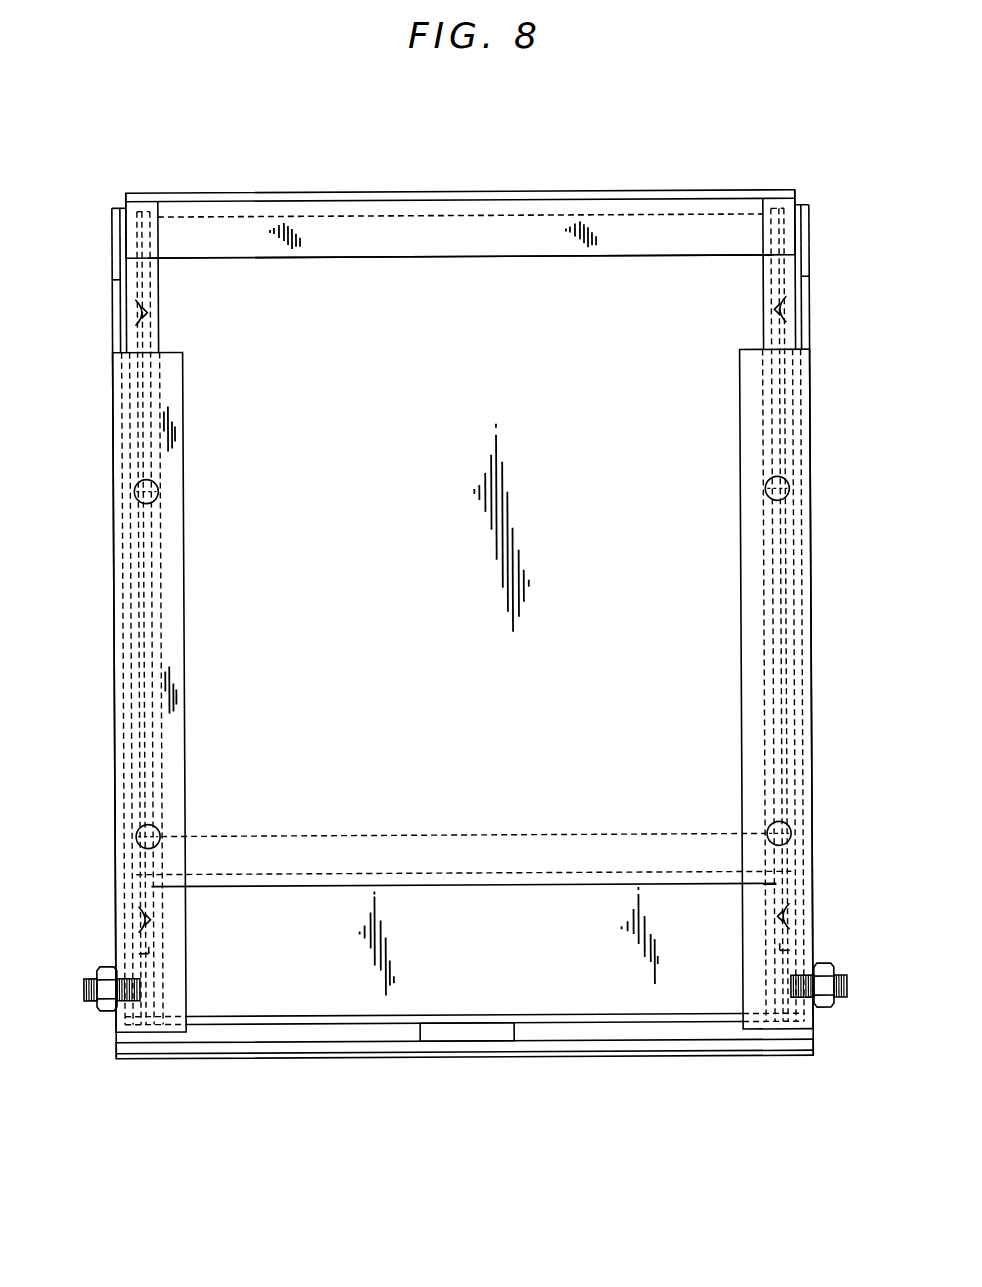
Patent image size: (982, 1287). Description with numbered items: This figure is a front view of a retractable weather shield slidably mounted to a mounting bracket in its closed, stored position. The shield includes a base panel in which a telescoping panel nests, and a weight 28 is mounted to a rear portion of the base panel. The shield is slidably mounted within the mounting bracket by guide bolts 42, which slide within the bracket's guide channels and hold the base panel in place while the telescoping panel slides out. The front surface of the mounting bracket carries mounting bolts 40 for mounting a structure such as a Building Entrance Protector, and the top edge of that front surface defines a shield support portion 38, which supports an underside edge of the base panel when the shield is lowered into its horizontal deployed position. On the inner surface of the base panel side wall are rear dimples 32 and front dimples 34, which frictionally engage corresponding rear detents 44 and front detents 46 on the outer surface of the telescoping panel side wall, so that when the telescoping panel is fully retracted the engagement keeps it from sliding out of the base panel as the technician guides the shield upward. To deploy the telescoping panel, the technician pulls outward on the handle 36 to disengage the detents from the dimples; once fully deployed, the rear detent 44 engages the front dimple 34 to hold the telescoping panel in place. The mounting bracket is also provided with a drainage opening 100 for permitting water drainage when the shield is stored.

The weight 28 is at (468, 1036).
The rear dimples 32 is at (140, 908).
The front dimples 34 is at (140, 300).
The handle 36 is at (641, 191).
The shield support portion 38 is at (180, 350).
The mounting bolts 40 is at (158, 487).
The guide bolts 42 is at (82, 988).
The rear detents 44 is at (140, 930).
The front detents 46 is at (140, 323).
The drainage opening 100 is at (162, 1040).